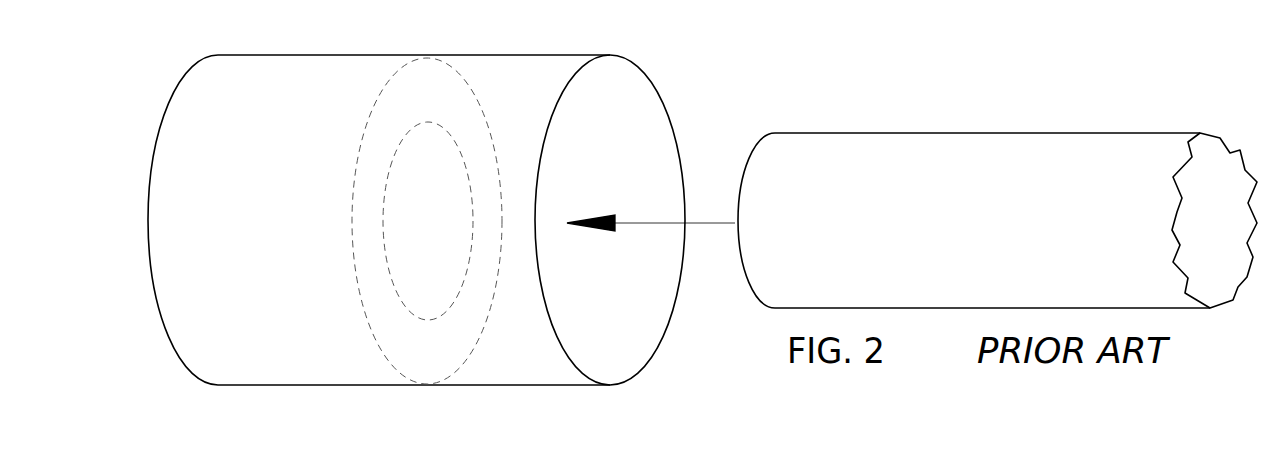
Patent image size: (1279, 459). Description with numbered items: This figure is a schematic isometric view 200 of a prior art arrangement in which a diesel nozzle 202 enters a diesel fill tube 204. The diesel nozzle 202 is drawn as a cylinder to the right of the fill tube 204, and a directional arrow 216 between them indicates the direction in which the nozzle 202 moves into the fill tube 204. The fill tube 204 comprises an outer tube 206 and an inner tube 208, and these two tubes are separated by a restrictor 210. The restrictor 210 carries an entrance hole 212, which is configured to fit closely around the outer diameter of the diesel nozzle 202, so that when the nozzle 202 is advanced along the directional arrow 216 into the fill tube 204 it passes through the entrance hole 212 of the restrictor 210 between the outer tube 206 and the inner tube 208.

The schematic isometric view 200 is at (997, 185).
The diesel nozzle 202 is at (1093, 163).
The diesel fill tube 204 is at (640, 315).
The outer tube 206 is at (510, 377).
The inner tube 208 is at (210, 373).
The restrictor 210 is at (382, 314).
The entrance hole 212 is at (420, 183).
The directional arrow 216 is at (650, 223).